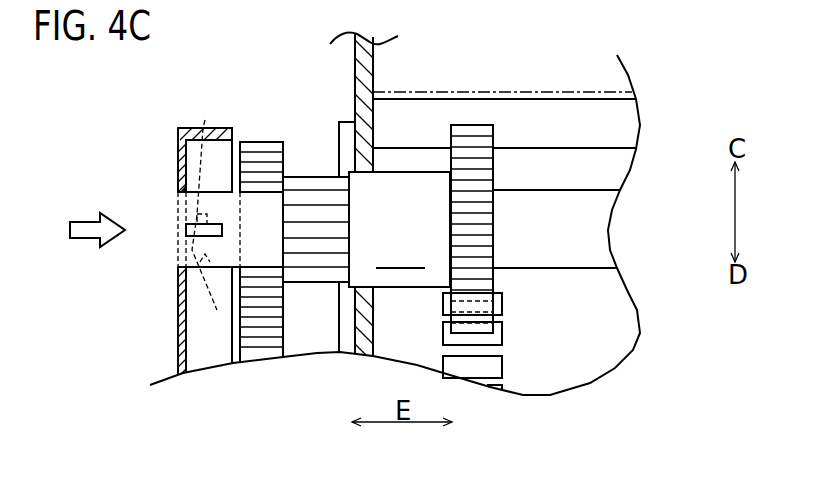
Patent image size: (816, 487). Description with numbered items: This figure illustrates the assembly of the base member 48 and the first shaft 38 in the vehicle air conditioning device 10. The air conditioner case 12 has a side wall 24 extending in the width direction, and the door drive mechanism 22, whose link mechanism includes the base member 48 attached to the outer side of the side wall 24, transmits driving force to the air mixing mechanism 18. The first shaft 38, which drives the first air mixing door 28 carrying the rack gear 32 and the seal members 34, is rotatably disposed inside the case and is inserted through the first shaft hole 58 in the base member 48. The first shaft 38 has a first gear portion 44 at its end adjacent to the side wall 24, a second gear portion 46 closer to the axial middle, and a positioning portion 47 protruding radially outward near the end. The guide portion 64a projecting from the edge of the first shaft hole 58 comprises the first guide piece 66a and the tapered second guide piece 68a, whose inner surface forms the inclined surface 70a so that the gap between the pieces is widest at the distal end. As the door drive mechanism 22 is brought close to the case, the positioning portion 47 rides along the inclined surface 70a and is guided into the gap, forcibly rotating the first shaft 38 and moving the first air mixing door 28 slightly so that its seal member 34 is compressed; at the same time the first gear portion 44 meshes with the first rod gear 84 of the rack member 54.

The vehicle air conditioning device 10 is at (58, 115).
The air conditioner case 12 is at (381, 56).
The air mixing mechanism 18 is at (648, 117).
The door drive mechanism 22 is at (176, 140).
The side wall 24 is at (353, 63).
The first air mixing door 28 is at (612, 313).
The rack gear 32 is at (485, 367).
The seal member 34 is at (564, 112).
The first shaft 38 is at (590, 228).
The first gear portion 44 is at (337, 230).
The second gear portion 46 is at (470, 127).
The positioning portion 47 is at (185, 229).
The base member 48 is at (176, 337).
The rack member 54 is at (244, 138).
The first shaft hole 58 is at (185, 192).
The guide portion 64a is at (212, 278).
The first guide piece 66a is at (203, 154).
The second guide piece 68a is at (203, 238).
The inclined surface 70a is at (192, 270).
The first rod gear 84 is at (265, 340).